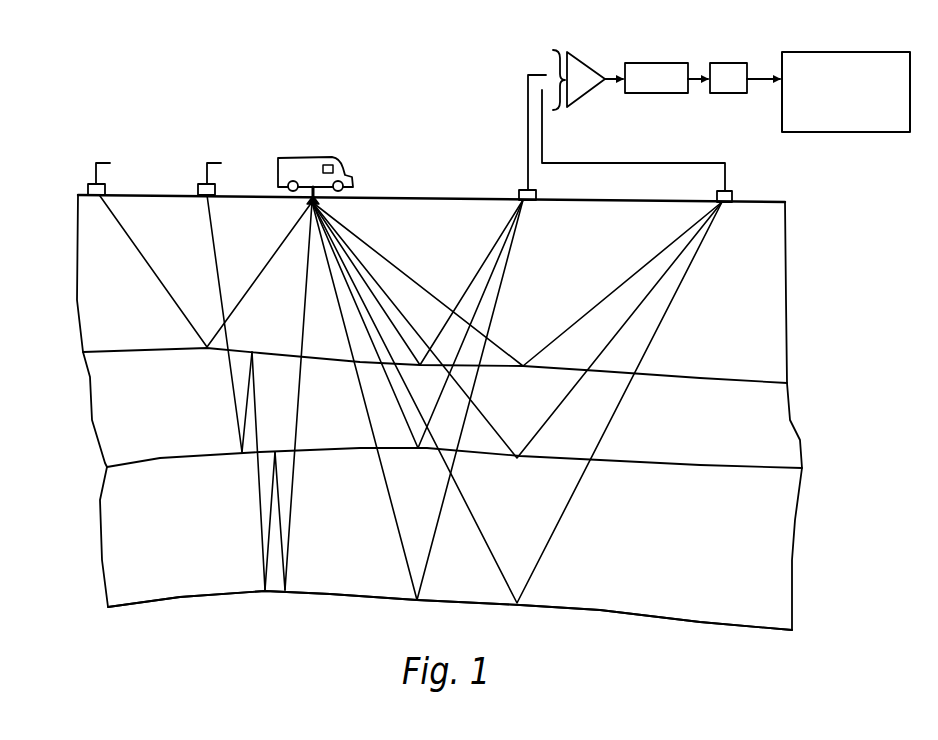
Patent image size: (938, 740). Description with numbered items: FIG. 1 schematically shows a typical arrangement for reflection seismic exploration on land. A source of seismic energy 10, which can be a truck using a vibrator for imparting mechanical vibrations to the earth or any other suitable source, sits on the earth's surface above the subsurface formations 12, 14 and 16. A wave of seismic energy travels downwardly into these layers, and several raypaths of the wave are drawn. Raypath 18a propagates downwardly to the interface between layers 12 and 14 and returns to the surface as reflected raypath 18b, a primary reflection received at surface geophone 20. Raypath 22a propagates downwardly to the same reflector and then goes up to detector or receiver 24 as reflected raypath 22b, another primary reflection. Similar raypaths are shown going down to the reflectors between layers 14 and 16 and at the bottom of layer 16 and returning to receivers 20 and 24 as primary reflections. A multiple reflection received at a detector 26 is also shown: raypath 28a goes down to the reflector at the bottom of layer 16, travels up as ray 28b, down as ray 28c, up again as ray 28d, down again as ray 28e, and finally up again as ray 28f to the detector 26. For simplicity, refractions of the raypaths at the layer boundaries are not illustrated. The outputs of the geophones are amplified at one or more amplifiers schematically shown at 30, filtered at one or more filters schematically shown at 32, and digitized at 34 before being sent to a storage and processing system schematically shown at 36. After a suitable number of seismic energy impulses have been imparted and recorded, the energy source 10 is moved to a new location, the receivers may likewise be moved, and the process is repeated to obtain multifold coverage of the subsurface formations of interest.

The source of seismic energy 10 is at (345, 146).
The subsurface formation 12 is at (722, 334).
The subsurface formation 14 is at (717, 444).
The subsurface formation 16 is at (715, 564).
The raypath 18a is at (362, 278).
The reflected raypath 18b is at (474, 279).
The surface geophone 20 is at (518, 190).
The raypath 22a is at (502, 348).
The reflected raypath 22b is at (595, 306).
The detector or receiver 24 is at (730, 191).
The detector 26 is at (200, 183).
The raypath 28a is at (302, 310).
The ray 28b is at (279, 525).
The ray 28c is at (268, 562).
The ray 28d is at (257, 498).
The ray 28e is at (249, 412).
The ray 28f is at (218, 267).
The amplifier 30 is at (597, 63).
The filter 32 is at (638, 62).
The digitizer 34 is at (717, 62).
The storage and processing system 36 is at (838, 52).